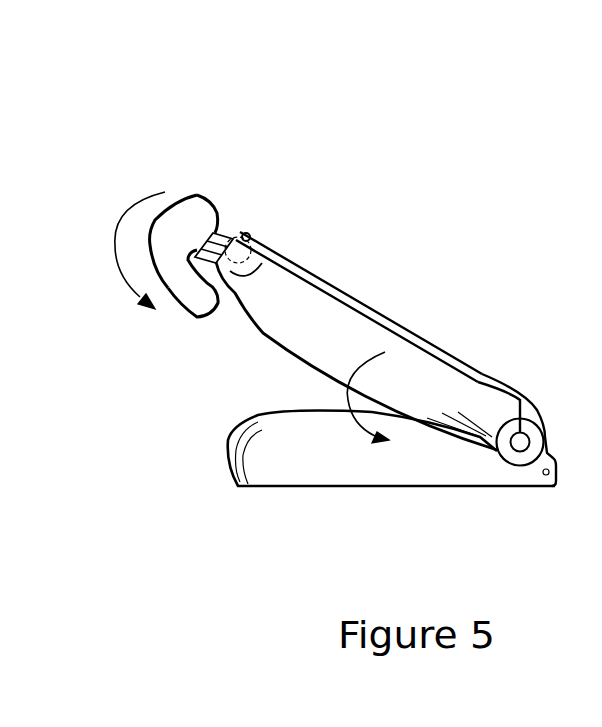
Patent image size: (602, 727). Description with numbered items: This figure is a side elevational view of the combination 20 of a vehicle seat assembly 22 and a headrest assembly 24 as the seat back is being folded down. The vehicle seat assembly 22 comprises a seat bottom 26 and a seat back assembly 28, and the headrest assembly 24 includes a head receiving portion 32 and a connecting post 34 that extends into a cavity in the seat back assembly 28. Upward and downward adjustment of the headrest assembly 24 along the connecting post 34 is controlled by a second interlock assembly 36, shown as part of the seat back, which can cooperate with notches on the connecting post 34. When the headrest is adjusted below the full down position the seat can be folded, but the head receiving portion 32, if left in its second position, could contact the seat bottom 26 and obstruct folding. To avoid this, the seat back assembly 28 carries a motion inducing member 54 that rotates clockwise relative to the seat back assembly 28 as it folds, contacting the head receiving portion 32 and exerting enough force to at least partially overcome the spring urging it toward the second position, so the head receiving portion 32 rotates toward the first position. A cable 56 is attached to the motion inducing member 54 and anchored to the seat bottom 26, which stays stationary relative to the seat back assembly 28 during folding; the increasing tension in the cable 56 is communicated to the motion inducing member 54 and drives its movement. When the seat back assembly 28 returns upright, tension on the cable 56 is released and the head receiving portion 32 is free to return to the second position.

The combination 20 is at (151, 408).
The vehicle seat assembly 22 is at (312, 388).
The headrest assembly 24 is at (194, 196).
The seat bottom 26 is at (342, 465).
The seat back assembly 28 is at (427, 372).
The head receiving portion 32 is at (212, 232).
The connecting post 34 is at (232, 232).
The second interlock assembly 36 is at (185, 300).
The motion inducing member 54 is at (250, 247).
The cable 56 is at (381, 313).